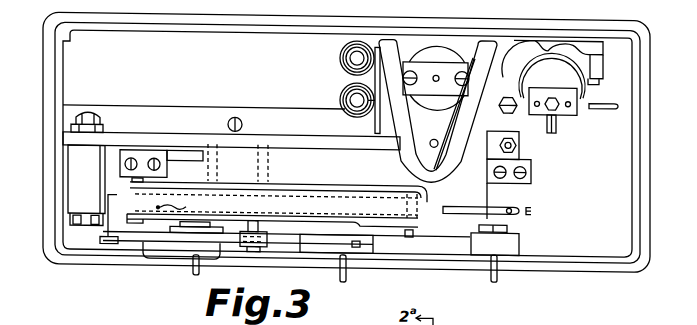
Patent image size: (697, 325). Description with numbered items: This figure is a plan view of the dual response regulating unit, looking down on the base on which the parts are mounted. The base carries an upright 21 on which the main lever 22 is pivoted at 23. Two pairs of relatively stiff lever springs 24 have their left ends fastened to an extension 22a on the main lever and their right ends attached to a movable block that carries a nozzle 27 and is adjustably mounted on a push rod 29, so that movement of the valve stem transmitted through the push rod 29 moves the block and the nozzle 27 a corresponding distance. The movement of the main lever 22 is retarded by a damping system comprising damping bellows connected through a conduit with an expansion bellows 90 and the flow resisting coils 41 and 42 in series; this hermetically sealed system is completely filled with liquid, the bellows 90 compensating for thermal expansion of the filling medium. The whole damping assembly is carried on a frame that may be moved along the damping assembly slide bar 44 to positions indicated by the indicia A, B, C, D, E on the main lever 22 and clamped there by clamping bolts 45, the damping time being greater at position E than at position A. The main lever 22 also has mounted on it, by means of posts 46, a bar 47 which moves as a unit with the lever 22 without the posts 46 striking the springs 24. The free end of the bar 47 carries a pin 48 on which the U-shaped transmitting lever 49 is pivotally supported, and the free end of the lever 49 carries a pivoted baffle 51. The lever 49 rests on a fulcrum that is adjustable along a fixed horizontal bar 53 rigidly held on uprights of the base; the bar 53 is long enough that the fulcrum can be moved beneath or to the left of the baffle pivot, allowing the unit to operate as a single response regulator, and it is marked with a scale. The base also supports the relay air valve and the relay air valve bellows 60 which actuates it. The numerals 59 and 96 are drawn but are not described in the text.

The upright 21 is at (86, 179).
The main lever 22 is at (314, 112).
The extension 22a is at (128, 146).
The pivot 23 is at (86, 109).
The lever springs 24 is at (277, 191).
The nozzle 27 is at (525, 211).
The push rod 29 is at (517, 142).
The flow resisting coil 41 is at (343, 86).
The flow resisting coil 42 is at (341, 50).
The damping assembly slide bar 44 is at (230, 113).
The clamping bolts 45 is at (514, 62).
The posts 46 is at (260, 147).
The bar 47 is at (428, 186).
The pin 48 is at (409, 235).
The U-shaped transmitting lever 49 is at (406, 229).
The baffle 51 is at (497, 202).
The fixed horizontal bar 53 is at (142, 229).
The stop 59 is at (580, 90).
The relay air valve bellows 60 is at (568, 114).
The expansion bellows 90 is at (438, 111).
The slide 96 is at (185, 205).